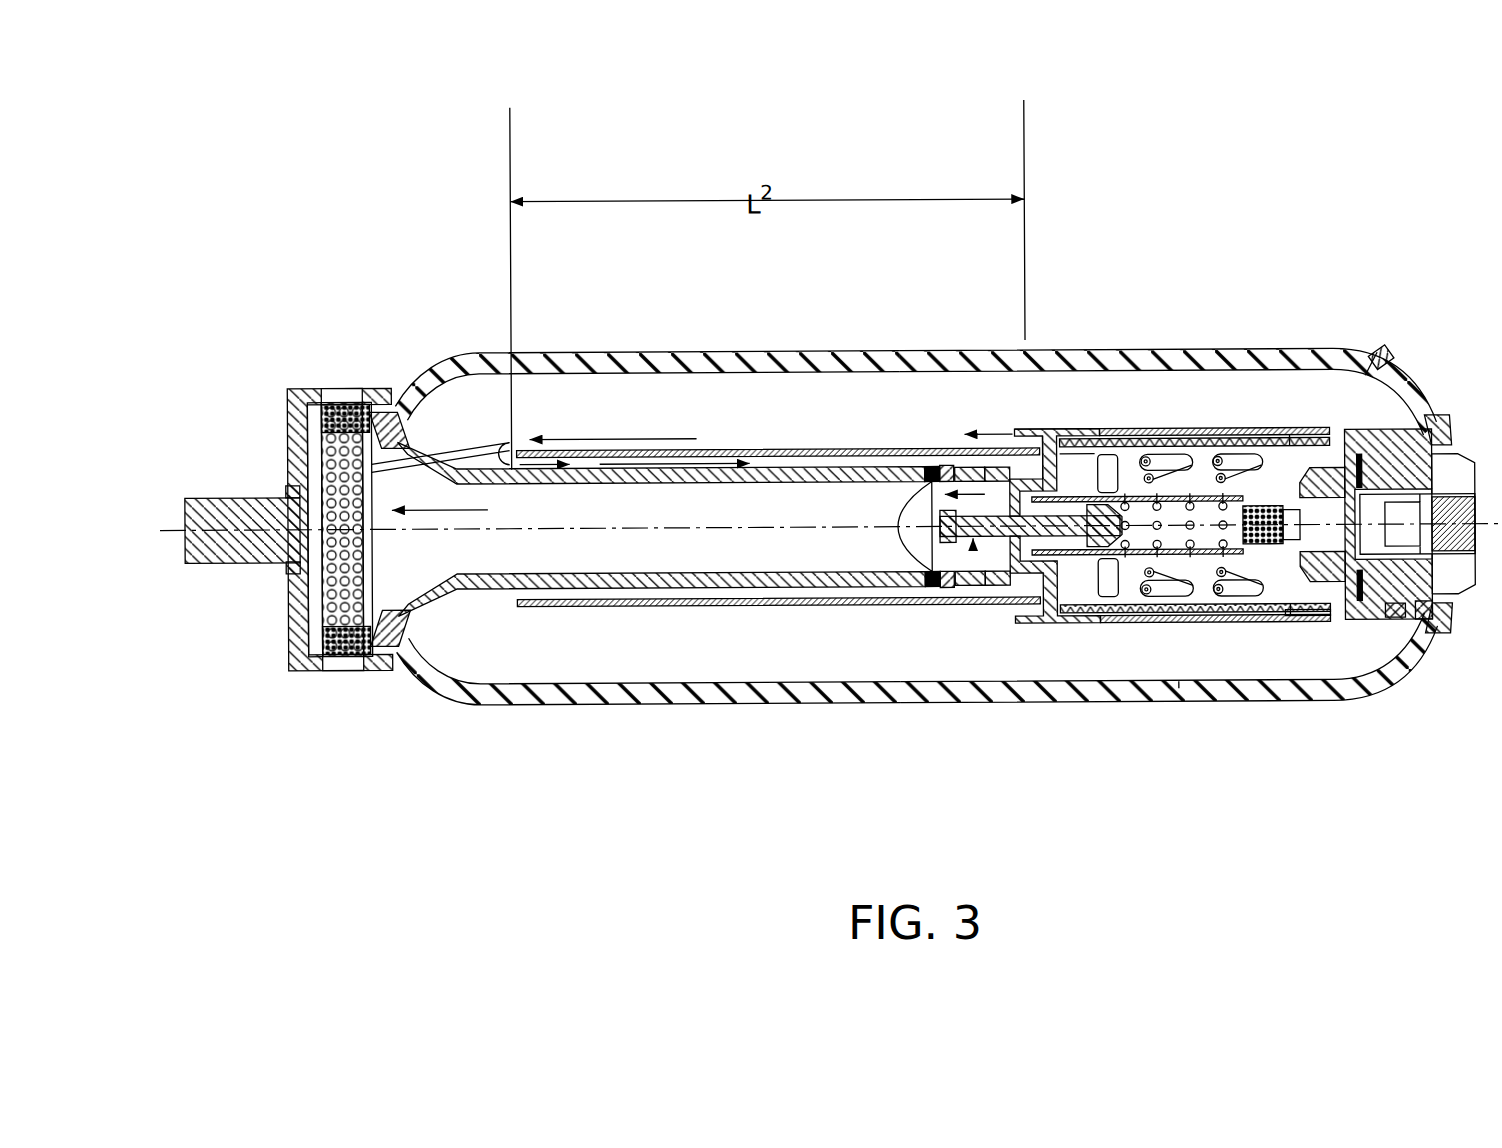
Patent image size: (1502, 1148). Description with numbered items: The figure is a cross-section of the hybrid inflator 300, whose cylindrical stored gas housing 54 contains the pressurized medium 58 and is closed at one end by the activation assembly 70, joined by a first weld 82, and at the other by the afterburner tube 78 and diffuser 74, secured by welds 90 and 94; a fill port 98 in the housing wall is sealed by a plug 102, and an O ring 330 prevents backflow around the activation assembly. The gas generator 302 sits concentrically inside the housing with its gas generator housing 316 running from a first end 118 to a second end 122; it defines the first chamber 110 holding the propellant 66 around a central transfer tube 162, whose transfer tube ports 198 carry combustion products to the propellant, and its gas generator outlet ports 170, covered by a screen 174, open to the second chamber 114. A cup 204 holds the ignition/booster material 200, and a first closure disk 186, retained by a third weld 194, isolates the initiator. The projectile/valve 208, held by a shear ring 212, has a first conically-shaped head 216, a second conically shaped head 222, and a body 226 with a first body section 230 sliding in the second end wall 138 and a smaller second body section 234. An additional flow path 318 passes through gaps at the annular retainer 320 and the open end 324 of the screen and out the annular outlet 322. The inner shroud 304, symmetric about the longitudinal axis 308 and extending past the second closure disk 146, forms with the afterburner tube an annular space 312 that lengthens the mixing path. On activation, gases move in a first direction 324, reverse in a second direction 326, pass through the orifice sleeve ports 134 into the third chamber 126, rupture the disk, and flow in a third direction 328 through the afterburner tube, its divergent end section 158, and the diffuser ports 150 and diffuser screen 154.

The stored gas housing 54 is at (1045, 351).
The pressurized medium 58 is at (632, 652).
The propellant 66 is at (1178, 683).
The activation assembly 70 is at (1462, 452).
The diffuser 74 is at (294, 390).
The afterburner tube 78 is at (473, 465).
The first weld 82 is at (1412, 438).
The weld 90 is at (384, 410).
The weld 94 is at (412, 660).
The fill port 98 is at (1392, 370).
The plug 102 is at (1378, 355).
The first chamber 110 is at (1203, 598).
The second chamber 114 is at (538, 392).
The first end 118 is at (1345, 628).
The second end 122 is at (1020, 428).
The third chamber 126 is at (925, 547).
The orifice sleeve ports 134 is at (950, 556).
The second end wall 138 is at (1078, 455).
The second closure disk 146 is at (931, 535).
The diffuser ports 150 is at (347, 668).
The diffuser screen 154 is at (335, 400).
The divergent end section 158 is at (433, 592).
The transfer tube 162 is at (1255, 430).
The gas generator outlet ports 170 is at (1150, 557).
The screen 174 is at (1290, 620).
The first closure disk 186 is at (1340, 505).
The third weld 194 is at (1400, 620).
The transfer tube ports 198 is at (1195, 457).
The ignition/booster material 200 is at (1268, 434).
The cup 204 is at (1273, 546).
The projectile/valve 208 is at (965, 608).
The shear ring 212 is at (1020, 623).
The first conically-shaped head 216 is at (1103, 623).
The second conically shaped head 222 is at (928, 575).
The body 226 is at (1000, 466).
The first body section 230 is at (1072, 548).
The second body section 234 is at (948, 468).
The hybrid inflator 300 is at (560, 700).
The gas generator 302 is at (1166, 440).
The inner shroud 304 is at (793, 466).
The longitudinal axis 308 is at (170, 535).
The annular space 312 is at (627, 440).
The gas generator housing 316 is at (1290, 440).
The additional flow path 318 is at (968, 440).
The annular retainer 320 is at (1130, 441).
The annular outlet 322 is at (1050, 430).
The first direction 324 is at (680, 448).
The second direction 326 is at (547, 440).
The third direction 328 is at (926, 468).
The O ring 330 is at (1428, 612).